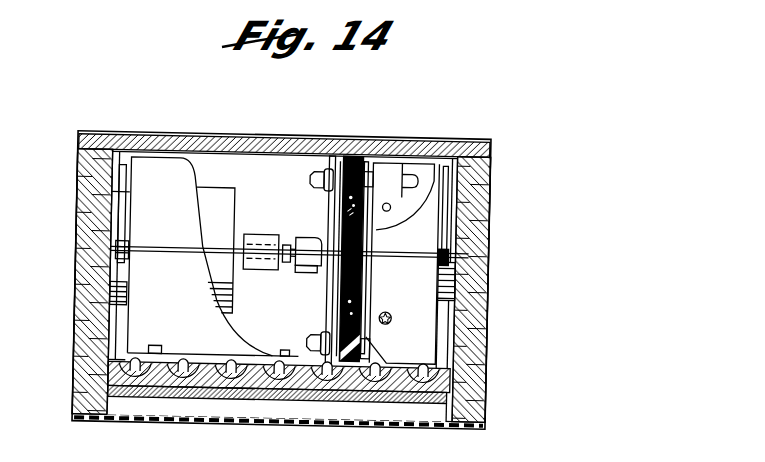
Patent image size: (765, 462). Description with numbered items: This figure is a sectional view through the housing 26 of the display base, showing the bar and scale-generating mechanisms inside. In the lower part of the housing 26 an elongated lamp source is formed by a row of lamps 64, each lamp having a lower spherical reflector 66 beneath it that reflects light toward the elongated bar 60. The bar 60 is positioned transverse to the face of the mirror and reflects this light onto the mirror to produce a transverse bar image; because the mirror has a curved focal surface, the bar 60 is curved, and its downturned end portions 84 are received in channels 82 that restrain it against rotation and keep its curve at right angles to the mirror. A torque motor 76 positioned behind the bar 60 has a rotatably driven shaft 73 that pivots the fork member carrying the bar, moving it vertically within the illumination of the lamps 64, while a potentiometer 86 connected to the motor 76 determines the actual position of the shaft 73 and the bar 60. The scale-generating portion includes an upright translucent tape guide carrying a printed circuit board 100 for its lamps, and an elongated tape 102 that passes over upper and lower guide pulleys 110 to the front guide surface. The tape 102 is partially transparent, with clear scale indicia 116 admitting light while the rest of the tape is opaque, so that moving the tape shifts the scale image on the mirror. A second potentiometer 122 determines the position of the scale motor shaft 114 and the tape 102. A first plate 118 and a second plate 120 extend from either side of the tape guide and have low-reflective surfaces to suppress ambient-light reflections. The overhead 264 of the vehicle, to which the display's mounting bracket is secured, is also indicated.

The housing 26 is at (234, 132).
The channels 82 is at (79, 219).
The downturned end portions 84 is at (80, 259).
The potentiometer 86 is at (122, 281).
The elongated bar 60 is at (446, 277).
The first plate 118 is at (168, 225).
The torque motor 76 is at (214, 250).
The rotatably driven shaft 73 is at (239, 247).
The shaft 114 is at (317, 237).
The guide pulleys 110 is at (340, 149).
The tape 102 is at (365, 146).
The scale indicia 116 is at (363, 269).
The printed circuit board 100 is at (403, 167).
The second plate 120 is at (429, 237).
The potentiometer 122 is at (406, 312).
The spherical reflector 66 is at (222, 376).
The lamps 64 is at (234, 358).
The overhead 264 is at (276, 423).